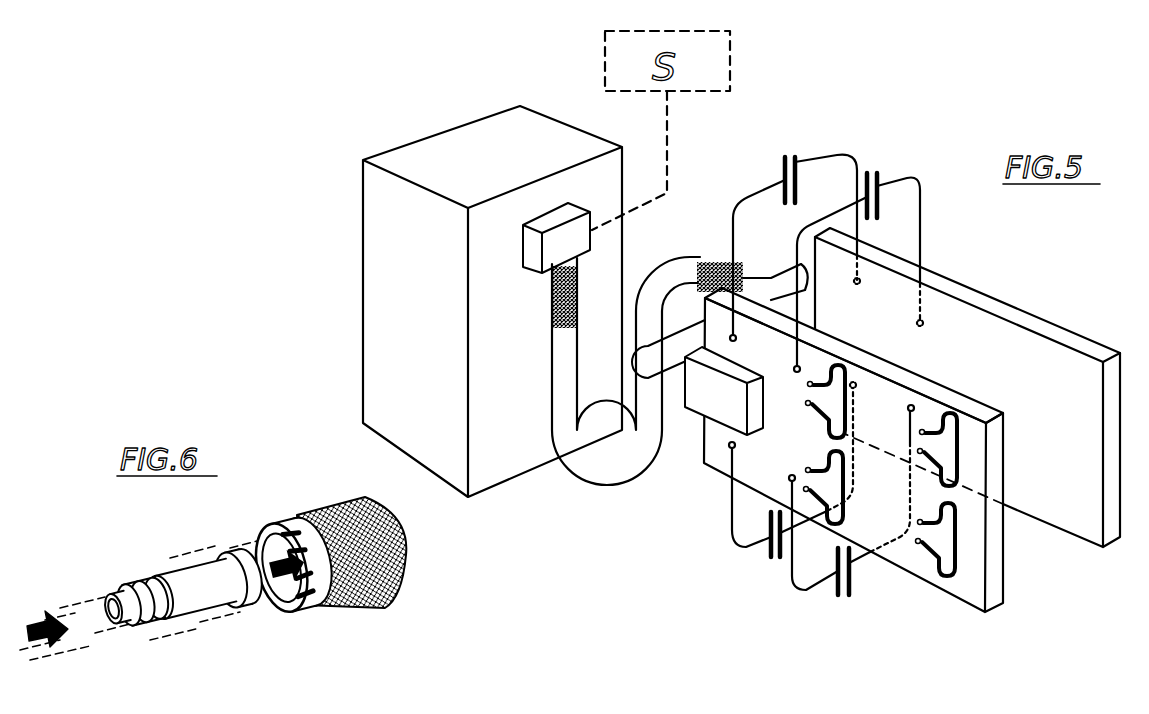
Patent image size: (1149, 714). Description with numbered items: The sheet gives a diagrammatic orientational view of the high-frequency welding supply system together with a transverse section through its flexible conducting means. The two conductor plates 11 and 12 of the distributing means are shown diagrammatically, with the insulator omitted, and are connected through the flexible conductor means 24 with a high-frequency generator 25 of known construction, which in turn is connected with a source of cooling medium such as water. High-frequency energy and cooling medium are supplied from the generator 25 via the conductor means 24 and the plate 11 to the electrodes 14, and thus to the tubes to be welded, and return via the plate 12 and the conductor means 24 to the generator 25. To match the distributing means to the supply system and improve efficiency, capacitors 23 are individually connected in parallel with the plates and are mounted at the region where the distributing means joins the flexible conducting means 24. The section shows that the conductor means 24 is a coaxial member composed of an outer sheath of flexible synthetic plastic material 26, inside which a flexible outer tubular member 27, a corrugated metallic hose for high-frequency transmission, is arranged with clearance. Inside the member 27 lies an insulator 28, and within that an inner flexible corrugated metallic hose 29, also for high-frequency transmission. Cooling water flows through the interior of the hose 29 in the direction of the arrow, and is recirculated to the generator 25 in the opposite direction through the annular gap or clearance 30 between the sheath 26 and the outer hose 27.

In FIG. 5, the conductor plate 11 is at (963, 590).
In FIG. 5, the conductor plate 12 is at (993, 310).
In FIG. 5, the electrodes 14 is at (845, 364).
In FIG. 5, the capacitors 23 is at (790, 152).
In FIG. 5, the flexible conductor means 24 is at (580, 485).
In FIG. 5, the high-frequency generator 25 is at (385, 186).
In FIG. 6, the outer sheath of flexible synthetic plastic material 26 is at (353, 600).
In FIG. 6, the flexible outer tubular member 27 is at (136, 603).
In FIG. 6, the insulator 28 is at (189, 590).
In FIG. 6, the inner flexible corrugated metallic hose 29 is at (238, 578).
In FIG. 6, the annular gap or clearance 30 is at (294, 564).